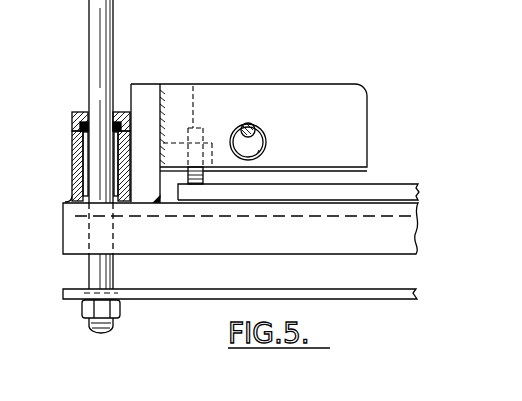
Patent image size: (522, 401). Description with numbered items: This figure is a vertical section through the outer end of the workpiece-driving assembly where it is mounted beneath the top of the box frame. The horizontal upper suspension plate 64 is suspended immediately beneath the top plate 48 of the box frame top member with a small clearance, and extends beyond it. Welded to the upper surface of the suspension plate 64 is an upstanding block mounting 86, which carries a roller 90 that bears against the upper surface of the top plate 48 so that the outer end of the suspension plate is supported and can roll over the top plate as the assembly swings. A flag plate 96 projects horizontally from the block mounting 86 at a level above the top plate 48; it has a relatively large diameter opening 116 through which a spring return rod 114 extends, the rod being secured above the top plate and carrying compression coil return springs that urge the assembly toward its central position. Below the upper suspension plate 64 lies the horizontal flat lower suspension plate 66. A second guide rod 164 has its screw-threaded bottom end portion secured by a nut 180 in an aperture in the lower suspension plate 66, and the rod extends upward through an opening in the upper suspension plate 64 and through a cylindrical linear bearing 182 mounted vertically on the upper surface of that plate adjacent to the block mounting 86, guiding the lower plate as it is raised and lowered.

The second guide rod 164 is at (99, 33).
The cylindrical linear bearing 182 is at (78, 163).
The block mounting 86 is at (143, 95).
The flag plate 96 is at (307, 102).
The roller 90 is at (194, 84).
The spring return rod 114 is at (249, 122).
The opening 116 is at (267, 135).
The top plate 48 is at (419, 192).
The upper suspension plate 64 is at (398, 238).
The lower suspension plate 66 is at (418, 293).
The nut 180 is at (117, 306).